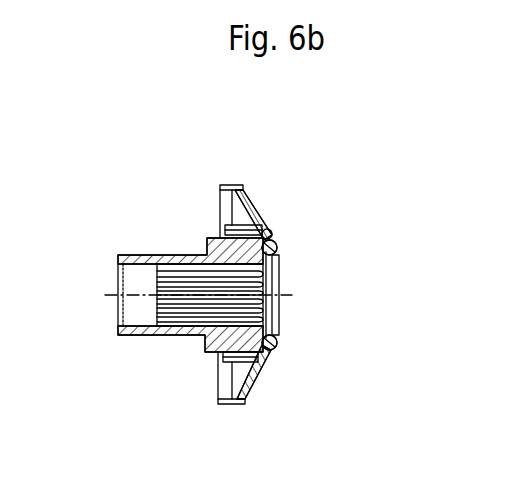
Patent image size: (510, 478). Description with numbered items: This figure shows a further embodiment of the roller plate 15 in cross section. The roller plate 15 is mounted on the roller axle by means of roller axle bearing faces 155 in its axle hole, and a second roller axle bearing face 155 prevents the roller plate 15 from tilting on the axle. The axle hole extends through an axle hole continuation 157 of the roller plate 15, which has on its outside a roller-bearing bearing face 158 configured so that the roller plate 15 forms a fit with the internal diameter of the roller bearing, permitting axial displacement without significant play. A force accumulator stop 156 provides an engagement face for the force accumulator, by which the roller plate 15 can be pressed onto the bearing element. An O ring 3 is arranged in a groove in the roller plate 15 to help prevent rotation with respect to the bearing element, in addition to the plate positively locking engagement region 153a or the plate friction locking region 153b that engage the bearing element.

The roller plate 15 is at (252, 156).
The plate positively locking engagement region 153a is at (317, 255).
The plate friction locking region 153b is at (270, 240).
The O ring 3 is at (278, 248).
The roller axle bearing face 155 is at (183, 266).
The force accumulator stop 156 is at (123, 323).
The axle hole continuation 157 is at (170, 337).
The roller-bearing bearing face 158 is at (195, 337).